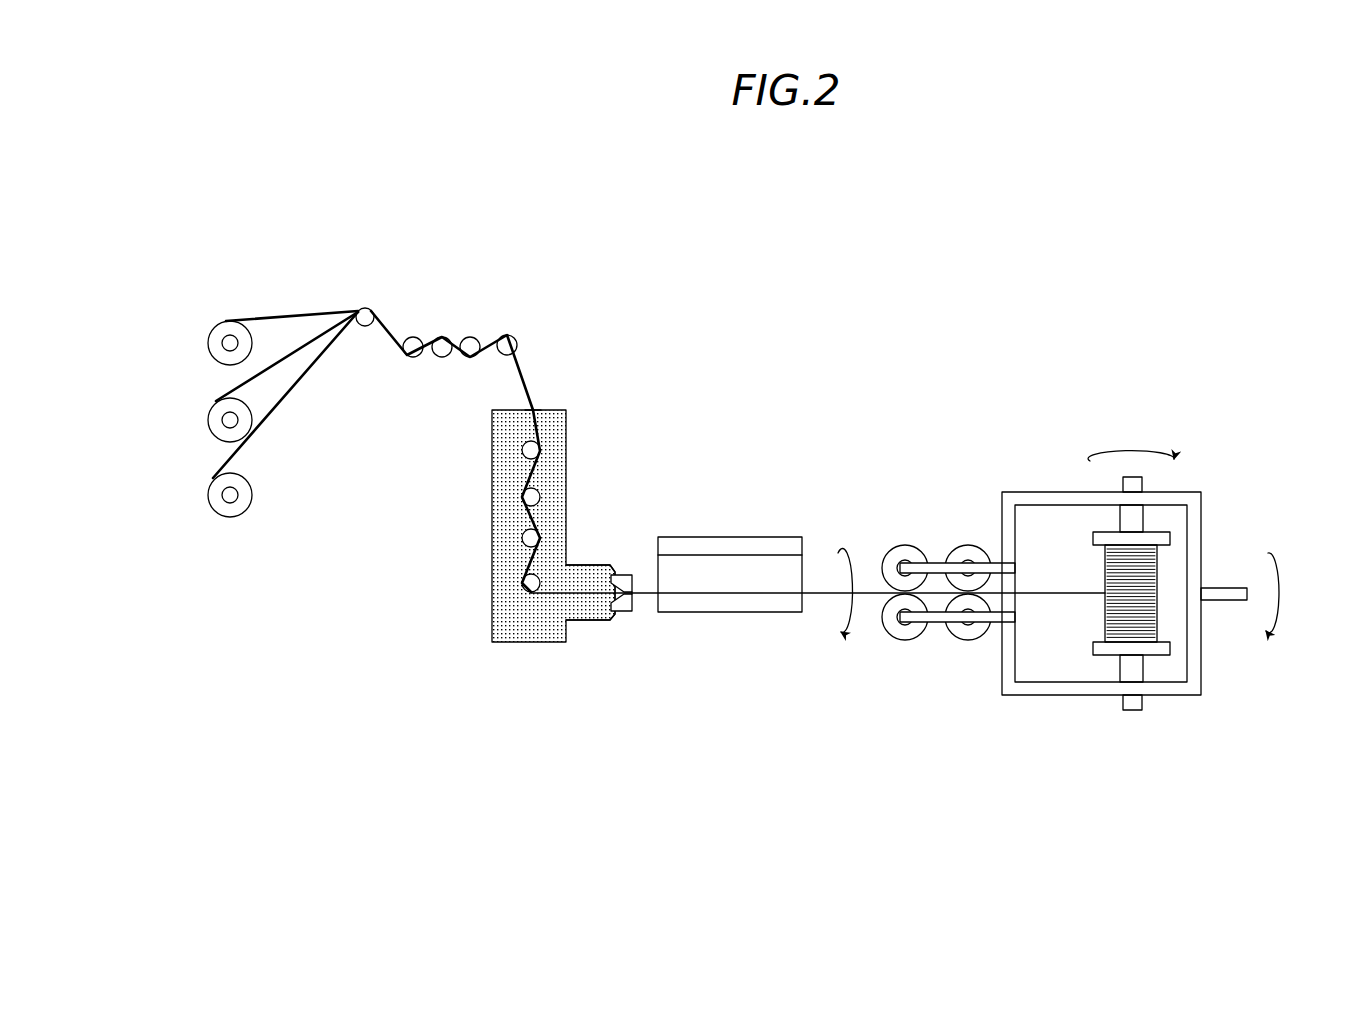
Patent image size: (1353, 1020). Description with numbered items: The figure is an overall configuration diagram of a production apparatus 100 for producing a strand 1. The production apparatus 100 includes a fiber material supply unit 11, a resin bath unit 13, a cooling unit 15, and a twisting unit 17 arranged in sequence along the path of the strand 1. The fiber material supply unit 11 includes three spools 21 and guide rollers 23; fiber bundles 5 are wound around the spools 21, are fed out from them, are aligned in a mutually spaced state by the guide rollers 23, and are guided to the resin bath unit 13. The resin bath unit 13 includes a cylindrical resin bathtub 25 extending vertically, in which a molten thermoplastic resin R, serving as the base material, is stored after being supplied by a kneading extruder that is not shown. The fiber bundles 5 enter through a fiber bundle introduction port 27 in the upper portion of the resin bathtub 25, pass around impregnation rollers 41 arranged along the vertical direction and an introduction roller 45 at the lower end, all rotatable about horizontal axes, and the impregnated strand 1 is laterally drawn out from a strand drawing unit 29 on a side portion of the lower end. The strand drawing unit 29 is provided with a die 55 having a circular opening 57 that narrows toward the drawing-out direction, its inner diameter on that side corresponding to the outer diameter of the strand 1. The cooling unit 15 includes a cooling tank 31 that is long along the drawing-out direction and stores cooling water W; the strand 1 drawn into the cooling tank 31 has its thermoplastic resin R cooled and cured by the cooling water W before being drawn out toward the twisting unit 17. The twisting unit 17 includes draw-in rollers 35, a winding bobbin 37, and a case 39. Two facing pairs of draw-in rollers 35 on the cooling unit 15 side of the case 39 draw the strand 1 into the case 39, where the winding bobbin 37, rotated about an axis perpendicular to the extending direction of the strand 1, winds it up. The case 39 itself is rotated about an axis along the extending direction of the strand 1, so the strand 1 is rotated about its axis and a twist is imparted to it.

The production apparatus 100 is at (850, 360).
The fiber material supply unit 11 is at (368, 291).
The spools 21 is at (210, 350).
The fiber bundle 5 is at (313, 305).
The guide rollers 23 is at (507, 335).
The resin bath unit 13 is at (592, 437).
The resin bathtub 25 is at (492, 568).
The fiber bundle introduction port 27 is at (537, 410).
The strand drawing unit 29 is at (590, 565).
The impregnation rollers 41 is at (521, 450).
The introduction roller 45 is at (525, 586).
The die 55 is at (623, 613).
The opening 57 is at (637, 587).
The thermoplastic resin R is at (532, 630).
The strand 1 is at (818, 595).
The cooling unit 15 is at (780, 528).
The cooling tank 31 is at (723, 613).
The cooling water W is at (725, 565).
The draw-in rollers 35 is at (907, 548).
The twisting unit 17 is at (1028, 453).
The winding bobbin 37 is at (1158, 531).
The case 39 is at (1172, 698).